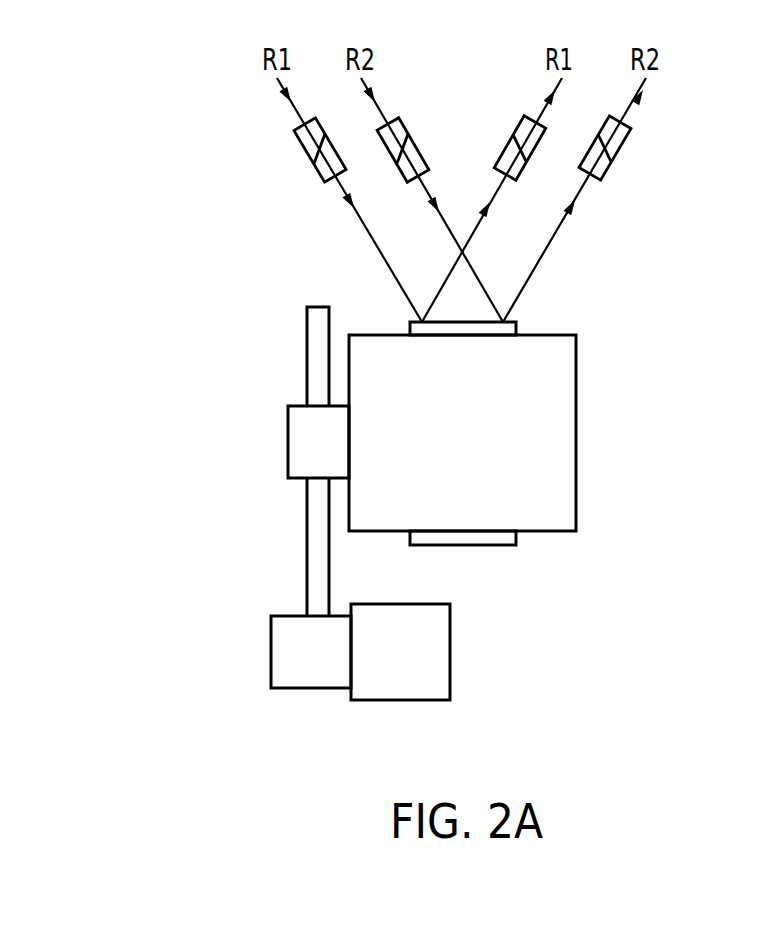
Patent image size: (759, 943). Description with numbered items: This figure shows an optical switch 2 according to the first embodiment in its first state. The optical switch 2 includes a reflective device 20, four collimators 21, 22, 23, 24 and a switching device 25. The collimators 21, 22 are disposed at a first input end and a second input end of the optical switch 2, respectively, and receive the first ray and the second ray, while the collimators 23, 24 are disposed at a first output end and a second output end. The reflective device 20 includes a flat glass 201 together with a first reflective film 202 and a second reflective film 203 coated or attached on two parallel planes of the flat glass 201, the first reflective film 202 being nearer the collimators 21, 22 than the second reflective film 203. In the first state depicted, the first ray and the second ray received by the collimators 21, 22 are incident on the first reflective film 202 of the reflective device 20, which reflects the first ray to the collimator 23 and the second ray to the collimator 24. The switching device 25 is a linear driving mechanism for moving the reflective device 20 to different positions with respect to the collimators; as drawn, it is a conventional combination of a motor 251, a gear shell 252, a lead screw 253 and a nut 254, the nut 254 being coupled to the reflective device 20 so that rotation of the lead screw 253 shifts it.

The optical switch 2 is at (205, 185).
The reflective device 20 is at (543, 433).
The flat glass 201 is at (568, 393).
The first reflective film 202 is at (507, 328).
The second reflective film 203 is at (517, 543).
The collimator 21 is at (305, 140).
The collimator 22 is at (397, 123).
The collimator 23 is at (522, 123).
The collimator 24 is at (618, 137).
The switching device 25 is at (285, 522).
The motor 251 is at (370, 688).
The gear shell 252 is at (290, 622).
The lead screw 253 is at (317, 525).
The nut 254 is at (293, 452).